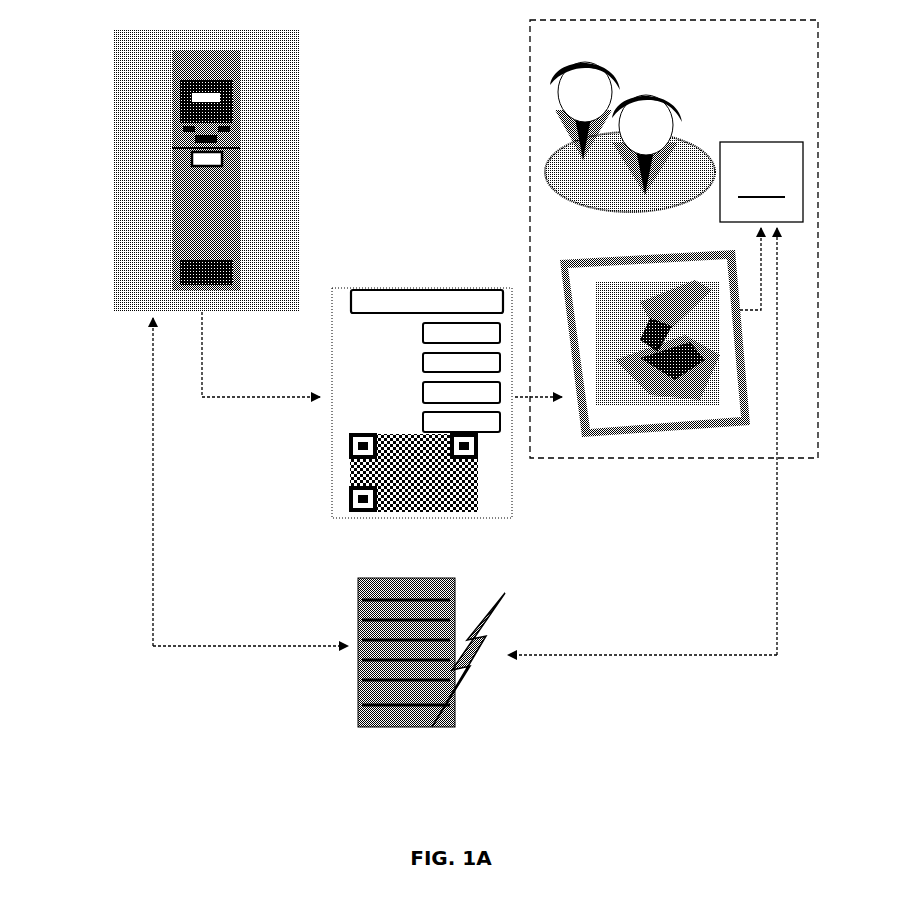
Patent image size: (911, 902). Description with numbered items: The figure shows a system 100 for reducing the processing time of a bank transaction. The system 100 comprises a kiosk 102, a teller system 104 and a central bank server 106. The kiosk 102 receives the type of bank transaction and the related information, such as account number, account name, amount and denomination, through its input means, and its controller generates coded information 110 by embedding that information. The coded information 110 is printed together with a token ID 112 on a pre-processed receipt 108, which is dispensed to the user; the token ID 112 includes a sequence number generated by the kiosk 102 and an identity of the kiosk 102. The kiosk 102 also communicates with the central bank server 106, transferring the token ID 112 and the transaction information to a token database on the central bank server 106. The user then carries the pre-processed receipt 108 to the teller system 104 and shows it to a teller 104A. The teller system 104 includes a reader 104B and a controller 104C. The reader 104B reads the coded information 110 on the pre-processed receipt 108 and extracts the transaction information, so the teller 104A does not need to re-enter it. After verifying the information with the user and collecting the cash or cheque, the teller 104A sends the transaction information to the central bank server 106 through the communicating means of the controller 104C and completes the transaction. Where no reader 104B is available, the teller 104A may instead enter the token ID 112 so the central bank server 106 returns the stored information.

The system 100 is at (665, 722).
The kiosk 102 is at (135, 133).
The teller system 104 is at (770, 42).
The teller 104A is at (682, 116).
The reader 104B is at (742, 338).
The controller 104C is at (761, 182).
The central bank server 106 is at (325, 699).
The pre-processed receipt 108 is at (581, 367).
The coded information 110 is at (476, 469).
The token ID 112 is at (366, 288).